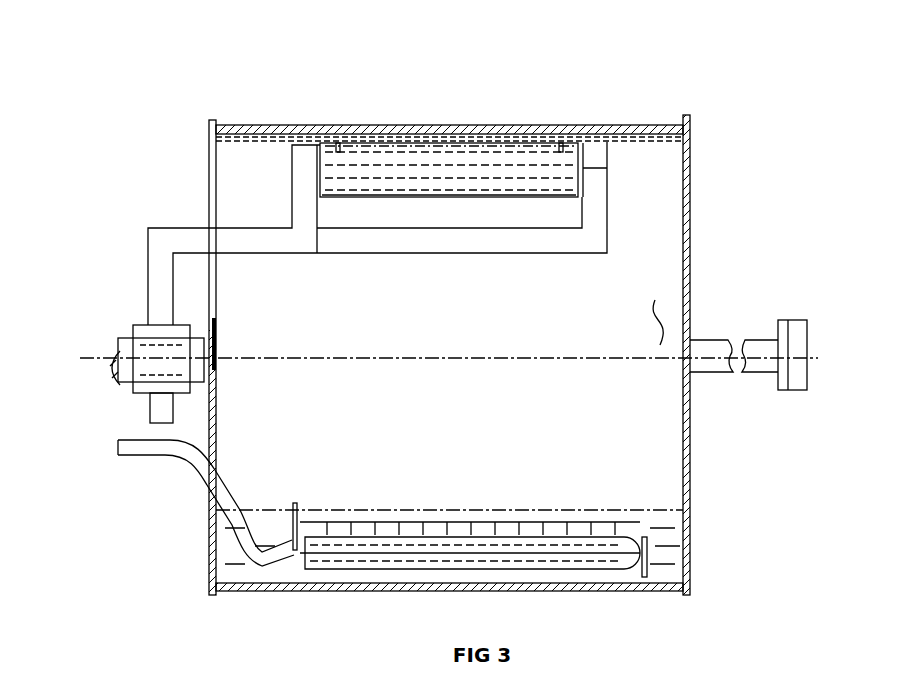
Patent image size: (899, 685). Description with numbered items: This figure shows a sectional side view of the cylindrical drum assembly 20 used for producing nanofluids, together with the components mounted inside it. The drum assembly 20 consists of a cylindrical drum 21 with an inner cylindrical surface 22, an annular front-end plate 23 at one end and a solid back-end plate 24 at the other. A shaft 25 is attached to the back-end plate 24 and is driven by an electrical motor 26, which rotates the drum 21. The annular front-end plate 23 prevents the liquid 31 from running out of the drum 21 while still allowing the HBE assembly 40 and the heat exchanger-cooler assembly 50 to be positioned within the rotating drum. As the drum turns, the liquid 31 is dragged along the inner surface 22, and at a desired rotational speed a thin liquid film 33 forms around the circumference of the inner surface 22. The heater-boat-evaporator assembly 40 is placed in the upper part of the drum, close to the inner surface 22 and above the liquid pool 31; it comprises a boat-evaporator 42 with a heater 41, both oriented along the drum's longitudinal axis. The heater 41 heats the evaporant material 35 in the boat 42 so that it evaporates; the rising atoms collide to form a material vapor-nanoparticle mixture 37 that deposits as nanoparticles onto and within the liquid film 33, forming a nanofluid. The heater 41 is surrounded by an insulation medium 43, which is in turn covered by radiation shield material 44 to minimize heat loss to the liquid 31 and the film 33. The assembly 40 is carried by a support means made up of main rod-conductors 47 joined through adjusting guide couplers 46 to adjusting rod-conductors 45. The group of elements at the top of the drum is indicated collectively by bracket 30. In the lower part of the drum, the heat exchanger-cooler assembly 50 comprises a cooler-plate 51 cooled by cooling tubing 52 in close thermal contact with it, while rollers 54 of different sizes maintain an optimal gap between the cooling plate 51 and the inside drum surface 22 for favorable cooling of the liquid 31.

The cylindrical drum assembly 20 is at (833, 67).
The cylindrical drum 21 is at (669, 121).
The inner cylindrical surface 22 is at (664, 135).
The annular front-end plate 23 is at (210, 118).
The back-end plate 24 is at (692, 168).
The shaft 25 is at (707, 338).
The electrical motor 26 is at (790, 330).
The upper lamp assembly 30 is at (690, 45).
The liquid 31 is at (657, 516).
The liquid film 33 is at (618, 170).
The evaporant material 35 is at (479, 153).
The material vapor-nanoparticle mixture 37 is at (463, 137).
The heater-boat-evaporator (HBE) assembly 40 is at (48, 105).
The heater 41 is at (437, 162).
The boat-evaporator 42 is at (398, 142).
The insulation medium 43 is at (372, 167).
The radiation shield material 44 is at (330, 192).
The adjusting rod-conductors 45 is at (266, 236).
The adjusting guide coupler 46 is at (140, 330).
The main rod-conductors 47 is at (125, 378).
The heat exchanger-cooler assembly 50 is at (732, 448).
The cooler-plate 51 is at (372, 534).
The cooling tubing (coil) 52 is at (262, 549).
The rollers 54 is at (296, 552).